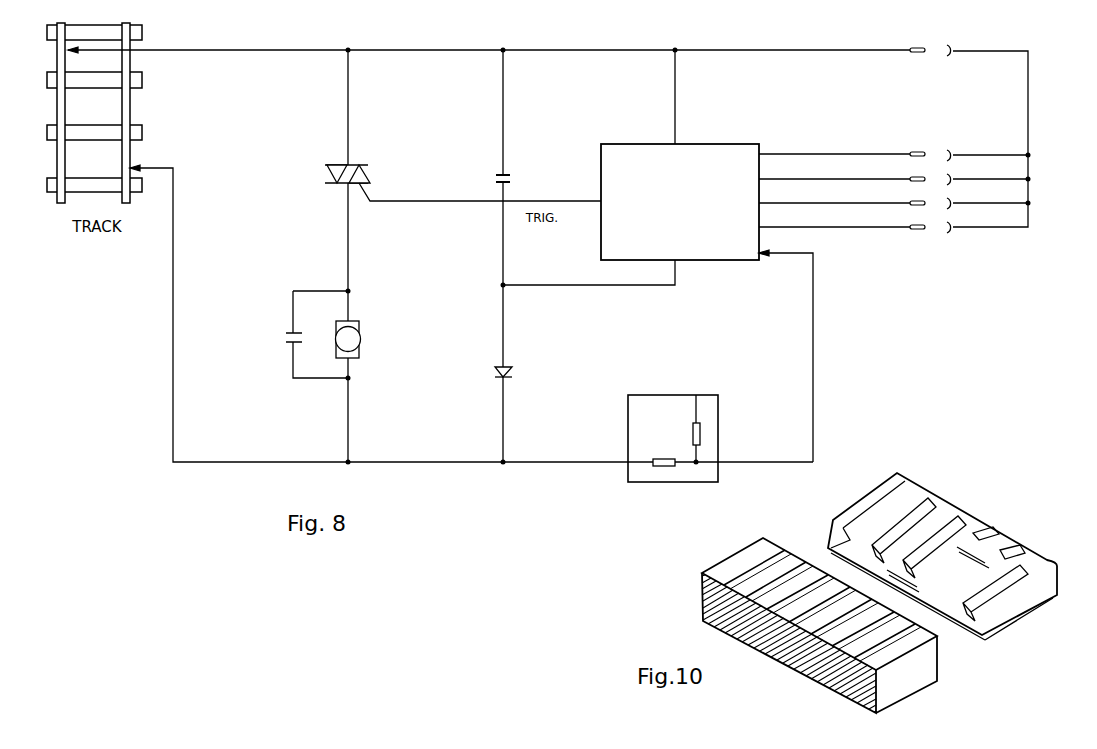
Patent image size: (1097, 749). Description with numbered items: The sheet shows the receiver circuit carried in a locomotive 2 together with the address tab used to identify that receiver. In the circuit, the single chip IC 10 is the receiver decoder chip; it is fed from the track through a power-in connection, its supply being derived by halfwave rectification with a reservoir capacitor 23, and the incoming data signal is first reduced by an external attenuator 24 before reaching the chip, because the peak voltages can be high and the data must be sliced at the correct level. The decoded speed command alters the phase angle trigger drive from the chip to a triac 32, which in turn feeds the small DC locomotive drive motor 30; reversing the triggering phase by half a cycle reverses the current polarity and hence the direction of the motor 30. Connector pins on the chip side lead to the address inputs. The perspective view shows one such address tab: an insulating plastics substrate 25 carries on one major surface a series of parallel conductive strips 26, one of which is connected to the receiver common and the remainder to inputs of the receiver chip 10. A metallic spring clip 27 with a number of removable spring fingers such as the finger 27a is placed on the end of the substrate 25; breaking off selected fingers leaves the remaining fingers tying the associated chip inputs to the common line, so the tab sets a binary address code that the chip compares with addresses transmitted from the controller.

In FIG. 8, the locomotive 2 is at (843, 313).
In FIG. 8, the single chip IC 10 is at (718, 144).
In FIG. 8, the reservoir capacitor 23 is at (506, 173).
In FIG. 8, the attenuator 24 is at (718, 420).
In FIG. 8, the locomotive drive motor 30 is at (361, 339).
In FIG. 8, the triac 32 is at (362, 185).
In FIG. 10, the insulating plastics substrate 25 is at (932, 668).
In FIG. 10, the conductive strips 26 is at (803, 562).
In FIG. 10, the metallic spring clip 27 is at (1047, 562).
In FIG. 10, the spring finger 27a is at (998, 595).